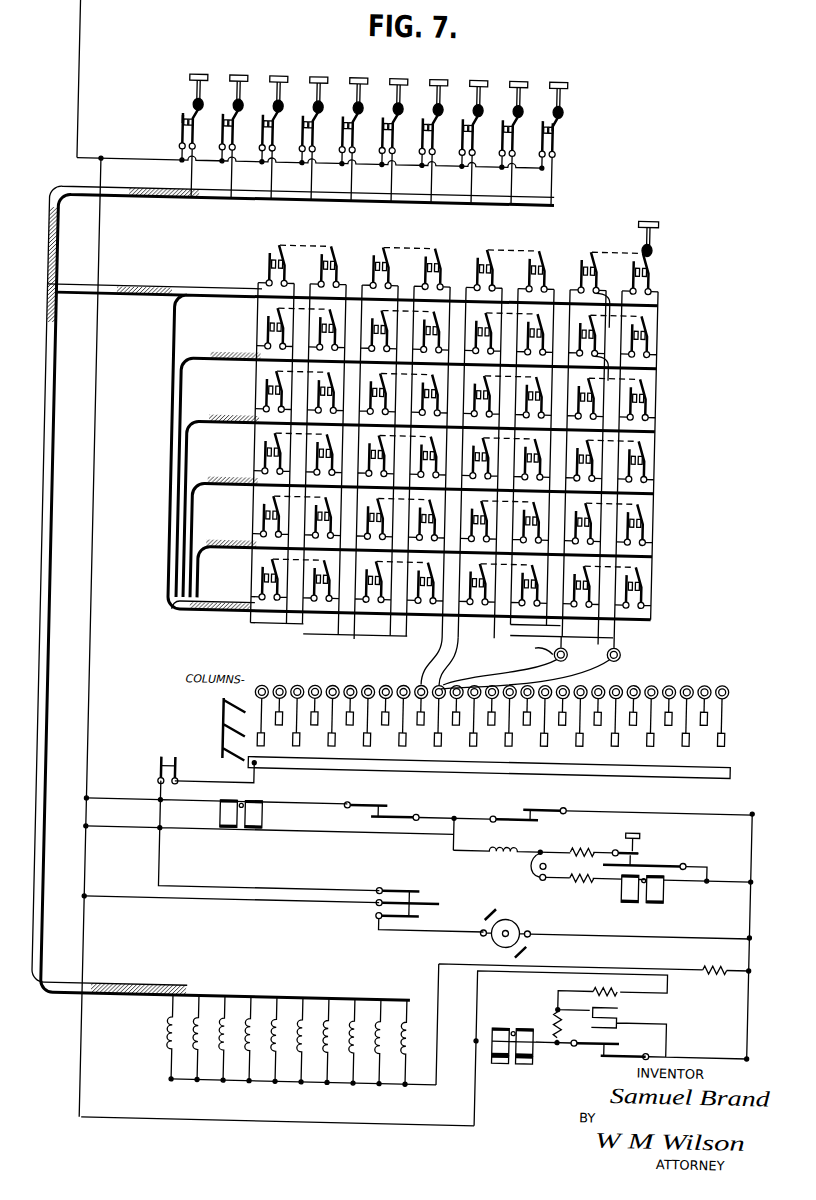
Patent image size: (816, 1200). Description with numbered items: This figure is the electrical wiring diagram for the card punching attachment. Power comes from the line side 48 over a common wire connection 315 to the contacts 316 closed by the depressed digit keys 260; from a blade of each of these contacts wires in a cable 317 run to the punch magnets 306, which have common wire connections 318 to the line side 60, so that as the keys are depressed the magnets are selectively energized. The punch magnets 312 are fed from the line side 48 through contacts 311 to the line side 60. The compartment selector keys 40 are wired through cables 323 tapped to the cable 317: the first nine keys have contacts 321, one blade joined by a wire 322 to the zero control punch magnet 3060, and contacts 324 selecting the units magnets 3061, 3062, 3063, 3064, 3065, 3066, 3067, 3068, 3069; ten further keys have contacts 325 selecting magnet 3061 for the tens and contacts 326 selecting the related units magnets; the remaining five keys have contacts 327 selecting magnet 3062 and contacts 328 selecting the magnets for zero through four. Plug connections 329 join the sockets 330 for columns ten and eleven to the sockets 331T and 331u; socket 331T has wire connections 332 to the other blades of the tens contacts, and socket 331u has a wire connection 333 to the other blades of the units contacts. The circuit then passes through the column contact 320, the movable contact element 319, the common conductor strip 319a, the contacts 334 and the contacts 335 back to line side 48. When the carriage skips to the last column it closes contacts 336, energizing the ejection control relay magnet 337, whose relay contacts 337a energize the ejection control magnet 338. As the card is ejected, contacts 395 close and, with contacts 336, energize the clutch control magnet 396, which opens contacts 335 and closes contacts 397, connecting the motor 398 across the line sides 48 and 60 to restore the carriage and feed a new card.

The compartment selector key 40 is at (646, 218).
The line side 48 is at (67, 120).
The line side 60 is at (757, 1000).
The keys 260 is at (384, 78).
The punch magnet 306 is at (266, 1012).
The zero control punch magnet 3060 is at (180, 1042).
The punch magnet 3061 is at (208, 1020).
The punch magnet 3062 is at (234, 1016).
The punch magnet 3063 is at (260, 1016).
The punch magnet 3064 is at (286, 1015).
The punch magnet 3065 is at (312, 1016).
The punch magnet 3066 is at (338, 1016).
The punch magnet 3067 is at (364, 1016).
The punch magnet 3068 is at (390, 1016).
The punch magnet 3069 is at (416, 1016).
The contacts 311 is at (628, 1052).
The punch magnet 312 is at (533, 1063).
The common wire connection 315 is at (106, 165).
The contacts 316 is at (213, 124).
The cable 317 is at (287, 203).
The common wire connection 318 is at (333, 1084).
The movable contact element 319 is at (225, 720).
The common conductor strip 319a is at (296, 771).
The column contact 320 is at (273, 740).
The contacts 321 is at (573, 244).
The wire 322 is at (600, 259).
The cable 323 is at (122, 294).
The contacts 324 is at (642, 266).
The contacts 325 is at (376, 248).
The contacts 326 is at (425, 252).
The contacts 327 is at (267, 252).
The contacts 328 is at (328, 251).
The plug connections 329 is at (428, 662).
The sockets 330 is at (425, 680).
The socket 331T is at (526, 653).
The socket 331u is at (622, 650).
The wire connections 332 is at (328, 626).
The wire connection 333 is at (356, 636).
The contacts 334 is at (165, 760).
The contacts 335 is at (417, 890).
The contacts 336 is at (540, 807).
The ejection control relay magnet 337 is at (492, 852).
The relay contacts 337a is at (532, 870).
The ejection control magnet 338 is at (630, 899).
The contacts 395 is at (392, 810).
The clutch control magnet 396 is at (240, 832).
The contacts 397 is at (426, 916).
The motor 398 is at (529, 923).